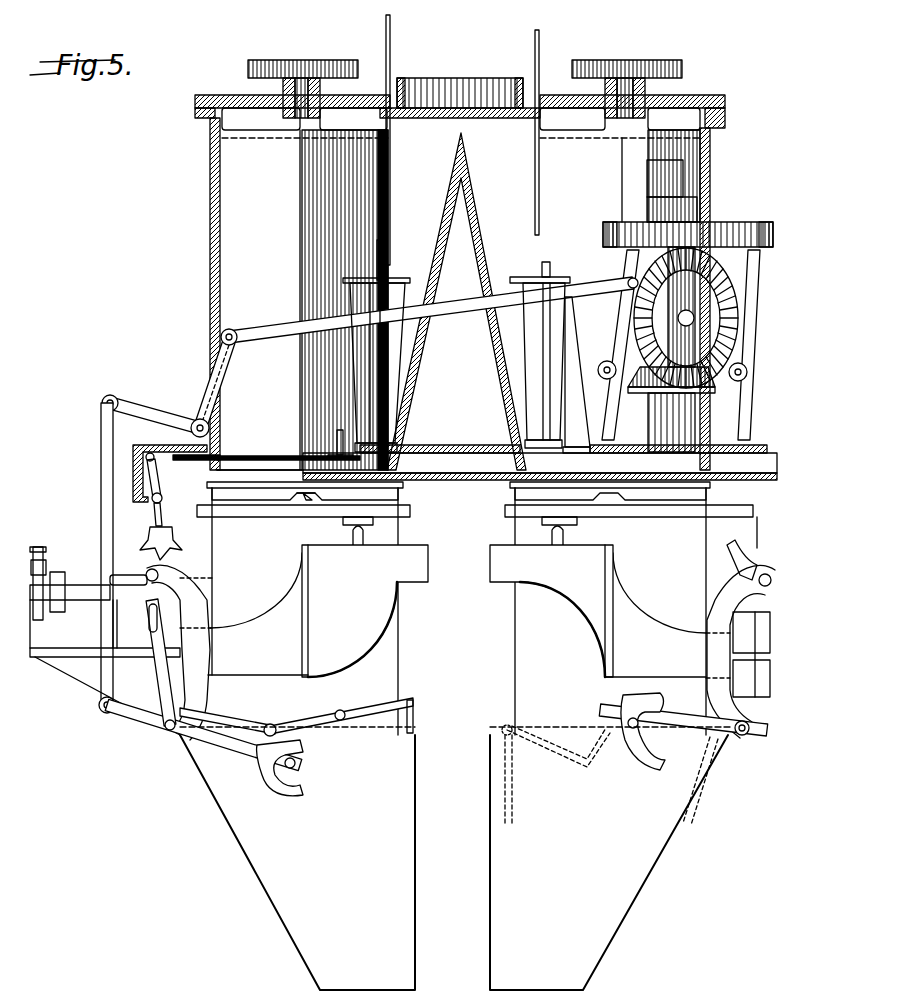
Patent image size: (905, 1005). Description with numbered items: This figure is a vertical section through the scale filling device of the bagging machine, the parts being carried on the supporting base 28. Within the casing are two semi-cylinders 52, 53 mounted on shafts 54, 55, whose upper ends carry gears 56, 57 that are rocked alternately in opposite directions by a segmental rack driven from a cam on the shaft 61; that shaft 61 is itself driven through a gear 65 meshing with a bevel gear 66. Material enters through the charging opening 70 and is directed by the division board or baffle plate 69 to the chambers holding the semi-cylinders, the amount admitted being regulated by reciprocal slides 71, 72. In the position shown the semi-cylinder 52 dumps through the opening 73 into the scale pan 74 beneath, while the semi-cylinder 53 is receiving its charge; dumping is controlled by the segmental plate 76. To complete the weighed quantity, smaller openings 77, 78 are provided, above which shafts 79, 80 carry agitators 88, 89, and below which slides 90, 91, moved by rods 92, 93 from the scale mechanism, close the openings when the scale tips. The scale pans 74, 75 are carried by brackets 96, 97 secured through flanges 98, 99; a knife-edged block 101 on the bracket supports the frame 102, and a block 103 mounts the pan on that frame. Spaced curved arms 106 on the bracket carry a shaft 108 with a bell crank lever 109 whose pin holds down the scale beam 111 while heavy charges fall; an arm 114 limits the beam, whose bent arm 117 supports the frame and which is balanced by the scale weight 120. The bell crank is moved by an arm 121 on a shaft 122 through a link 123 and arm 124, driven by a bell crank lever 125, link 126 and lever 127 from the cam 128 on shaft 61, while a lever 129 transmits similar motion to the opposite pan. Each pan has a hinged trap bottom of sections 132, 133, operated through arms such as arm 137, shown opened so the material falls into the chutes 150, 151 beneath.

The base plate 28 is at (758, 448).
The semi-cylinder 52 is at (302, 222).
The semi-cylinder 53 is at (640, 170).
The shaft 54 is at (283, 97).
The shaft 55 is at (645, 97).
The gear 56 is at (303, 55).
The gear 57 is at (182, 243).
The shaft 61 is at (690, 318).
The gear 65 is at (737, 296).
The bevel gear 66 is at (715, 390).
The division board or baffle plate 69 is at (456, 301).
The charging opening 70 is at (445, 90).
The reciprocal slide 71 is at (390, 32).
The reciprocal slide 72 is at (535, 52).
The opening 73 is at (226, 462).
The scale pan 74 is at (289, 611).
The scale pan 75 is at (692, 549).
The segmental plate 76 is at (412, 481).
The opening 77 is at (400, 449).
The opening 78 is at (525, 452).
The shaft 79 is at (386, 263).
The shaft 80 is at (547, 257).
The agitator 88 is at (360, 378).
The agitator 89 is at (568, 362).
The slide 90 is at (345, 455).
The slide 91 is at (512, 481).
The rod 92 is at (298, 466).
The rod 93 is at (576, 455).
The bracket 96 is at (258, 652).
The bracket 97 is at (655, 658).
The flange 98 is at (310, 578).
The flange 99 is at (615, 590).
The block 101 is at (361, 542).
The frame 102 is at (255, 510).
The block 103 is at (304, 514).
The curved arm 106 is at (172, 604).
The shaft 108 is at (146, 575).
The bell crank lever 109 is at (122, 573).
The scale beam 111 is at (73, 584).
The arm 114 is at (80, 662).
The upwardly extending arm 117 is at (166, 556).
The scale weight 120 is at (53, 566).
The arm 121 is at (163, 712).
The shaft 122 is at (170, 731).
The link 123 is at (101, 455).
The arm 124 is at (126, 716).
The bell crank lever 125 is at (151, 413).
The link 126 is at (247, 331).
The lever 127 is at (626, 300).
The cam 128 is at (735, 222).
The lever 129 is at (752, 348).
The trap bottom section 132 is at (512, 797).
The trap bottom section 133 is at (690, 797).
The arm 137 is at (415, 712).
The chute 150 is at (297, 858).
The chute 151 is at (610, 858).